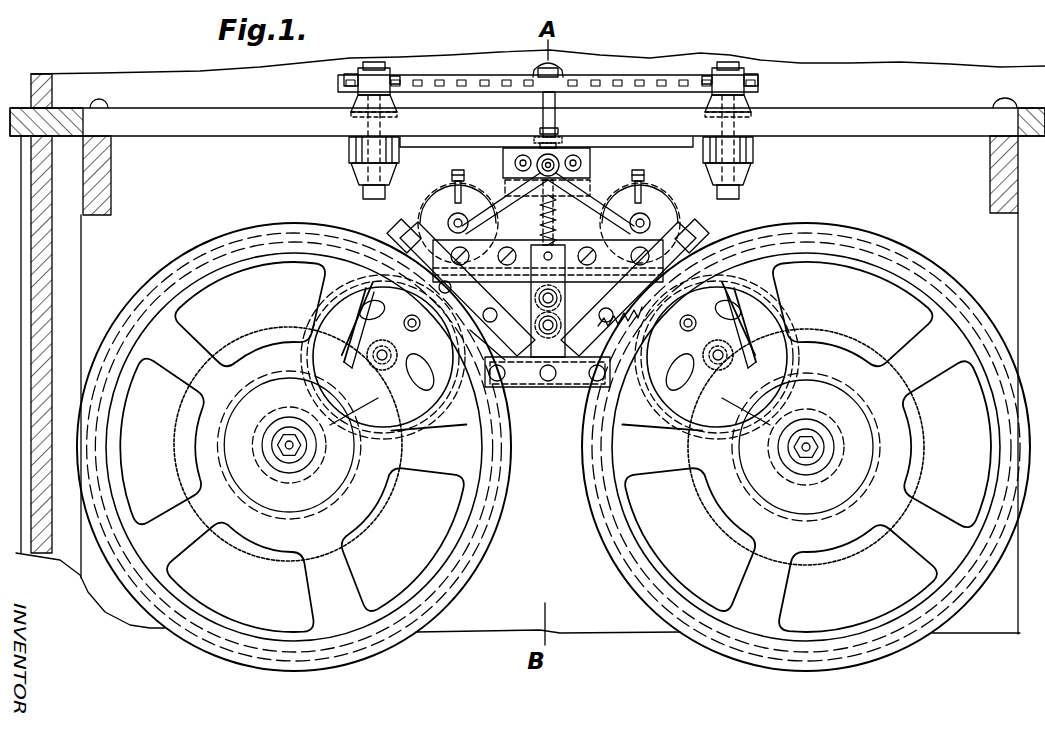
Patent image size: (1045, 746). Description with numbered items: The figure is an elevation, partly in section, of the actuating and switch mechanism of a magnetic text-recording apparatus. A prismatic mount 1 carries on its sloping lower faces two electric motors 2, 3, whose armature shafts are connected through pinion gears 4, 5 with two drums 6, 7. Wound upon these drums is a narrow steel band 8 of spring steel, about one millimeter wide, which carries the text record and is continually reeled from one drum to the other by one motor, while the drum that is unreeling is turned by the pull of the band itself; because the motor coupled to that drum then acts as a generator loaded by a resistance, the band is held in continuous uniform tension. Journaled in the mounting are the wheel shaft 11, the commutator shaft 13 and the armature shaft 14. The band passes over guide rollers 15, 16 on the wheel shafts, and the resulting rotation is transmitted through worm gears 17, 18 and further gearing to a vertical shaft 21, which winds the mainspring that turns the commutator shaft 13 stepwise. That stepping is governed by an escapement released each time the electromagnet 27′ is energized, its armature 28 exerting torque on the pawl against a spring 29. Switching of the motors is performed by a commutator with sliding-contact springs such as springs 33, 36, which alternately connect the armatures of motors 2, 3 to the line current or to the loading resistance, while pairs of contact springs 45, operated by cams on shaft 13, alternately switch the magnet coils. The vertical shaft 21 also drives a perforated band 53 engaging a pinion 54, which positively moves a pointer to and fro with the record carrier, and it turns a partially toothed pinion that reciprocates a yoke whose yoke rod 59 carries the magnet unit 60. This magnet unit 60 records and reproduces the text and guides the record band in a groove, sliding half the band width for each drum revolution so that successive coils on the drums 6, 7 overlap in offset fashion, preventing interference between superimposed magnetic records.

The prismatic mount 1 is at (403, 195).
The electric motor 2 is at (436, 386).
The electric motor 3 is at (657, 373).
The pinion gear 4 is at (380, 347).
The pinion gear 5 is at (376, 515).
The drum 6 is at (457, 583).
The drum 7 is at (620, 562).
The steel band 8 is at (600, 150).
The wheel shaft 11 is at (446, 293).
The commutator shaft 13 is at (482, 304).
The armature shaft 14 is at (488, 340).
The guide roller 15 is at (428, 209).
The guide roller 16 is at (700, 216).
The worm gear 17 is at (540, 212).
The worm gear 18 is at (457, 168).
The vertical shaft 21 is at (556, 123).
The electromagnet 27′ is at (515, 398).
The armature 28 is at (545, 390).
The spring 29 is at (664, 292).
The sliding-contact spring 33 is at (540, 245).
The sliding-contact spring 36 is at (556, 245).
The contact springs 45 is at (700, 262).
The perforated band 53 is at (637, 82).
The pinion 54 is at (560, 70).
The yoke rod 59 is at (577, 157).
The magnet unit 60 is at (523, 157).